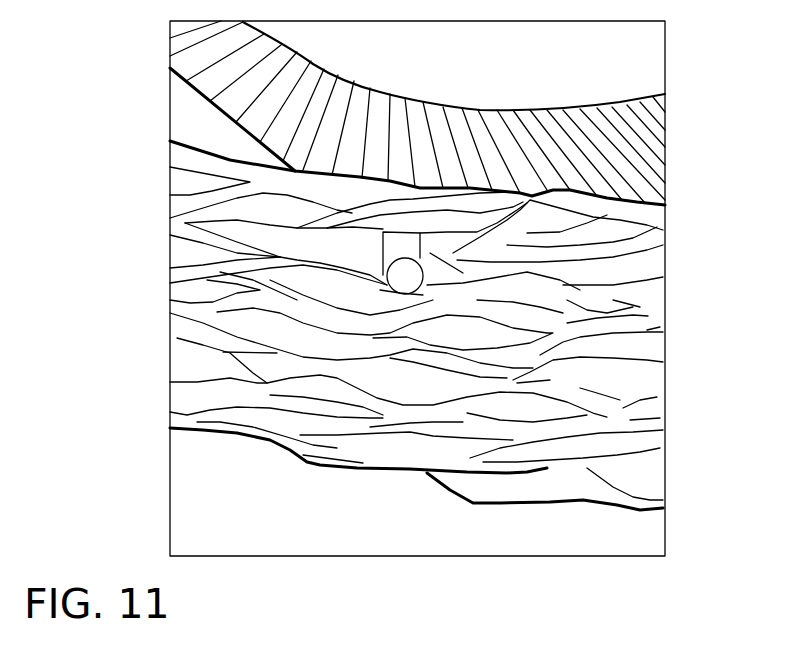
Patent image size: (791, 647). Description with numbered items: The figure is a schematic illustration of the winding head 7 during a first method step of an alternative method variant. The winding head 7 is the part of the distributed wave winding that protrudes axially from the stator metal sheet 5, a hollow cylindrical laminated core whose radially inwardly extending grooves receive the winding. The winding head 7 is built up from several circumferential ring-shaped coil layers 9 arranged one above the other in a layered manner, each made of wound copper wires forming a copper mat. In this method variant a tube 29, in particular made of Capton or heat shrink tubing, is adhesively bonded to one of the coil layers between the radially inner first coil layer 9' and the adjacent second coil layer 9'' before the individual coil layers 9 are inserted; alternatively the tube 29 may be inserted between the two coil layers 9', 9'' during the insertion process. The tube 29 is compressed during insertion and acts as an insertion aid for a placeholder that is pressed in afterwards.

The stator metal sheet 5 is at (648, 132).
The winding head 7 is at (209, 163).
The coil layer 9 is at (460, 442).
The first coil layer 9' is at (463, 238).
The second coil layer 9'' is at (467, 324).
The tube 29 is at (402, 248).